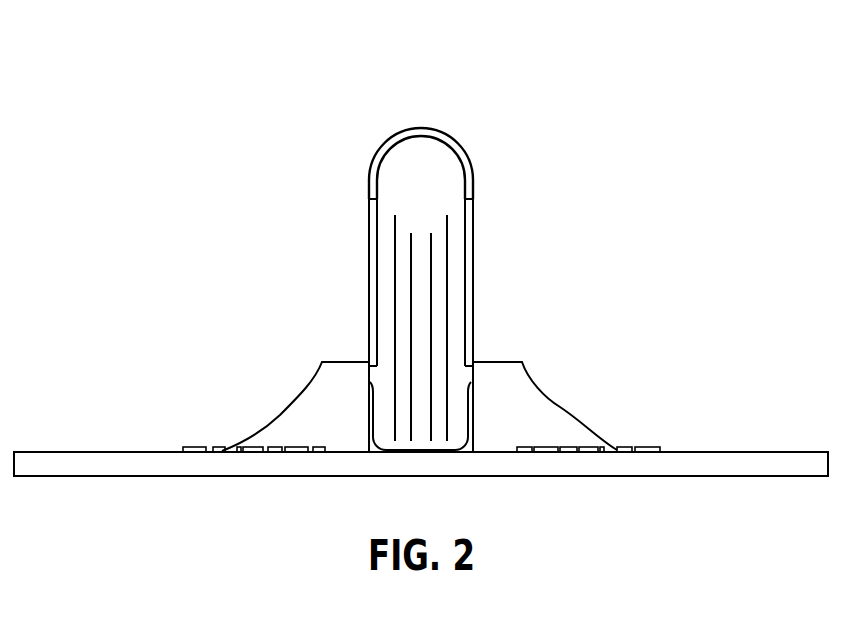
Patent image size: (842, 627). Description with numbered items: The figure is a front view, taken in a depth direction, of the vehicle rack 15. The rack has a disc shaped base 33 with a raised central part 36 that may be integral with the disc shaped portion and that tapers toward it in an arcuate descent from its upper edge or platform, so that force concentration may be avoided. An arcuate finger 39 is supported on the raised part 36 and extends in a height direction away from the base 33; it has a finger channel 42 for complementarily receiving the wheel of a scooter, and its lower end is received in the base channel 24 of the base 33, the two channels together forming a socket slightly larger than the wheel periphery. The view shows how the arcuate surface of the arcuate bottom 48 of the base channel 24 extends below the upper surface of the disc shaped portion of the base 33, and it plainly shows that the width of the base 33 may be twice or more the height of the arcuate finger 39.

The rack 15 is at (274, 86).
The base channel 24 is at (457, 427).
The disc shaped base 33 is at (38, 462).
The raised central part 36 is at (327, 397).
The arcuate finger 39 is at (435, 128).
The finger channel 42 is at (428, 192).
The arcuate bottom 48 is at (367, 418).